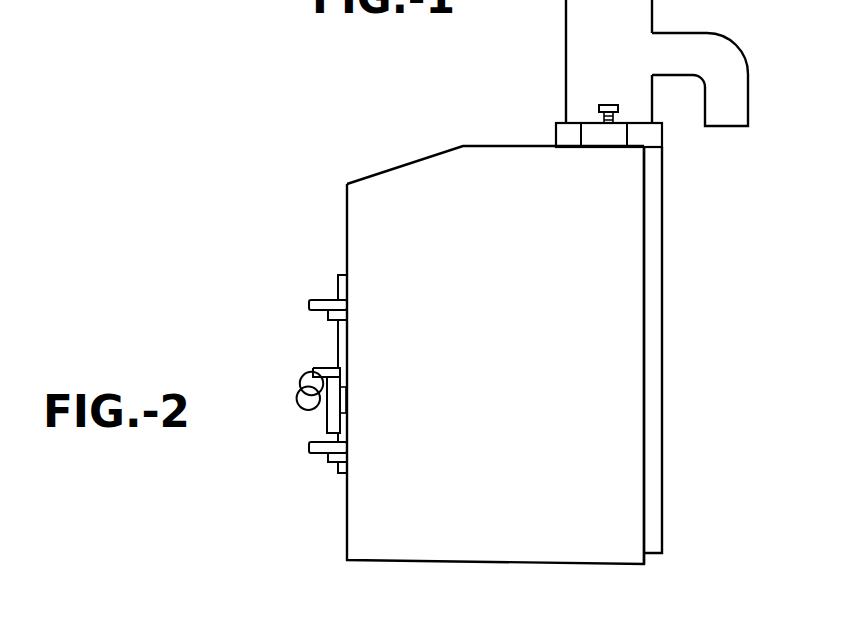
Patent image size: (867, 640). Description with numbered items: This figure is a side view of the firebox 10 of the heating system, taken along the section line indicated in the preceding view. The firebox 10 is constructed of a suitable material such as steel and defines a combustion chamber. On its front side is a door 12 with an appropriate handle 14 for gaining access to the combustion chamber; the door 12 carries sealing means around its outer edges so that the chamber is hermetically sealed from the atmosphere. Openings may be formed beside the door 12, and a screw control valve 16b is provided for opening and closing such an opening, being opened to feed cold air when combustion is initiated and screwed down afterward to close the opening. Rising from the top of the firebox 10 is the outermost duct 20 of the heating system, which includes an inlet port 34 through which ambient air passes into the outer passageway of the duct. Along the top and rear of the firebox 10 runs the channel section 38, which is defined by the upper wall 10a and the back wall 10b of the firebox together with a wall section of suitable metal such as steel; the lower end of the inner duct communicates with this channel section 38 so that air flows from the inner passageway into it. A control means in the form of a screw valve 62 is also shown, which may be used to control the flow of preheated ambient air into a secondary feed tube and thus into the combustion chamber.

The firebox 10 is at (355, 148).
The upper wall of firebox 10a is at (502, 148).
The back wall of firebox 10b is at (645, 255).
The door 12 is at (342, 338).
The handle 14 is at (302, 385).
The screw control valve 16b is at (336, 419).
The outermost duct 20 is at (584, 23).
The inlet port 34 is at (732, 59).
The channel section 38 is at (662, 398).
The screw valve 62 is at (610, 104).